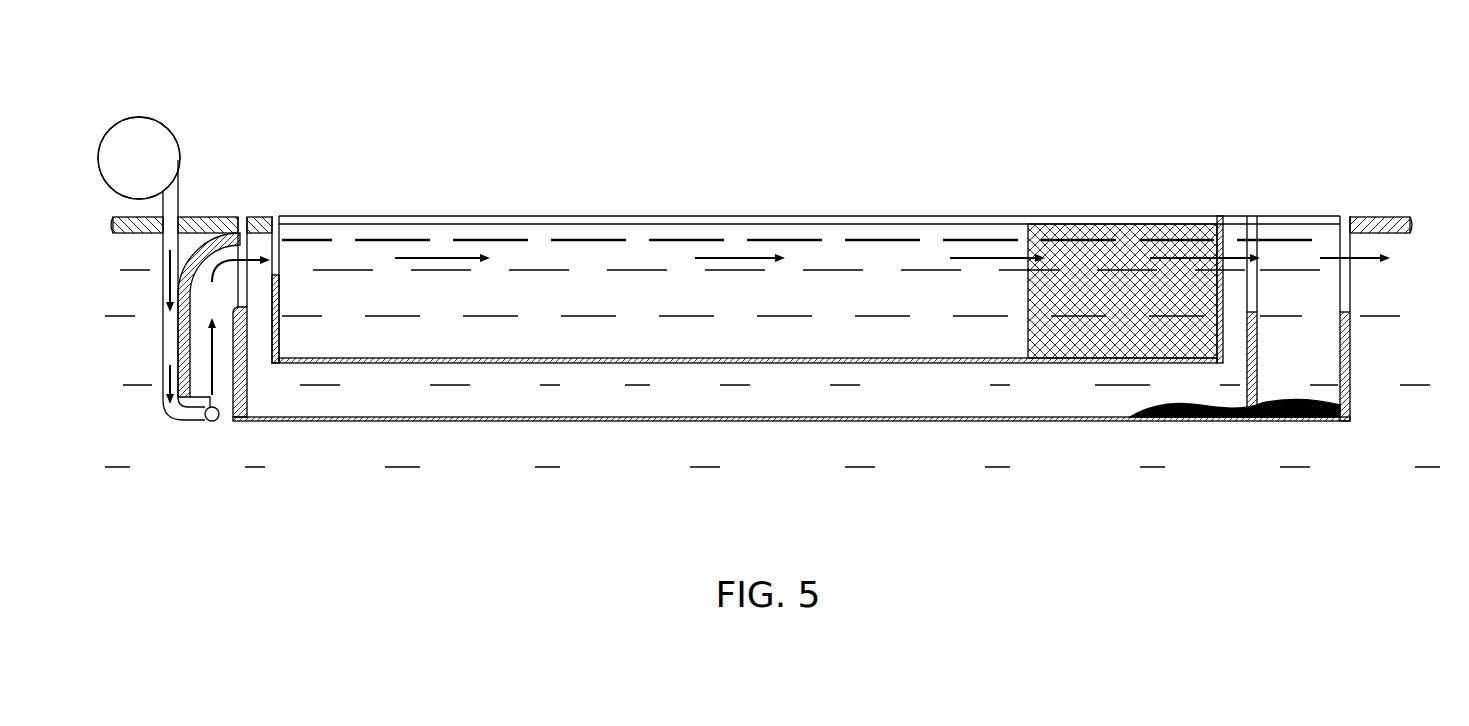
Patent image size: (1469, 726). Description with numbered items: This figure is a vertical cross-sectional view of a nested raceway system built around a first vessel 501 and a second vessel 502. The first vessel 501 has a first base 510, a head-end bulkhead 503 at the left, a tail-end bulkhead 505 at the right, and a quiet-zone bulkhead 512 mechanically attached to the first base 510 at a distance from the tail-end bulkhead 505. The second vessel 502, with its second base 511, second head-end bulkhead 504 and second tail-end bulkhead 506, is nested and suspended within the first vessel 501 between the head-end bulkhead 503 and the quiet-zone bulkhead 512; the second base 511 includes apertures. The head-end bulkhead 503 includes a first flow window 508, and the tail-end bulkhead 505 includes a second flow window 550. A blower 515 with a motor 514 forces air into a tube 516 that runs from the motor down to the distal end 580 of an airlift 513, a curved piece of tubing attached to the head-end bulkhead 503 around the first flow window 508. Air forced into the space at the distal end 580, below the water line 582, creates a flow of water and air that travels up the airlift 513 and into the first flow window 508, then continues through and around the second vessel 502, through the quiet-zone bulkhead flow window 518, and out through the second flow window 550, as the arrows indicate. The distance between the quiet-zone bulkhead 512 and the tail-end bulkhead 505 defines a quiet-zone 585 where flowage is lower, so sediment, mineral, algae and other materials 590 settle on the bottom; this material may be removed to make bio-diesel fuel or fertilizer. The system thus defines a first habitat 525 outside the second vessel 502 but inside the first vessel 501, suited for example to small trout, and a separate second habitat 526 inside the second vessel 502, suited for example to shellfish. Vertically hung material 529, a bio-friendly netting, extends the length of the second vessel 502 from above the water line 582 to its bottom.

The first vessel 501 is at (987, 400).
The second vessel 502 is at (880, 347).
The head-end bulkhead 503 is at (248, 357).
The second head-end bulkhead 504 is at (280, 327).
The tail-end bulkhead 505 is at (1347, 340).
The second tail-end bulkhead 506 is at (1226, 343).
The first flow window 508 is at (243, 243).
The first base 510 is at (855, 421).
The second base 511 is at (778, 363).
The quiet-zone bulkhead 512 is at (1258, 335).
The airlift 513 is at (220, 247).
The motor 514 is at (170, 127).
The blower 515 is at (168, 118).
The tube 516 is at (178, 250).
The quiet-zone bulkhead flow window 518 is at (1258, 250).
The first habitat 525 is at (685, 408).
The second habitat 526 is at (582, 345).
The vertically hung material 529 is at (1120, 250).
The second flow window 550 is at (1348, 250).
The distal end of the airlift 580 is at (215, 423).
The water line 582 is at (355, 216).
The quiet-zone 585 is at (1317, 358).
The sediment, mineral, algae, and other materials 590 is at (1307, 421).